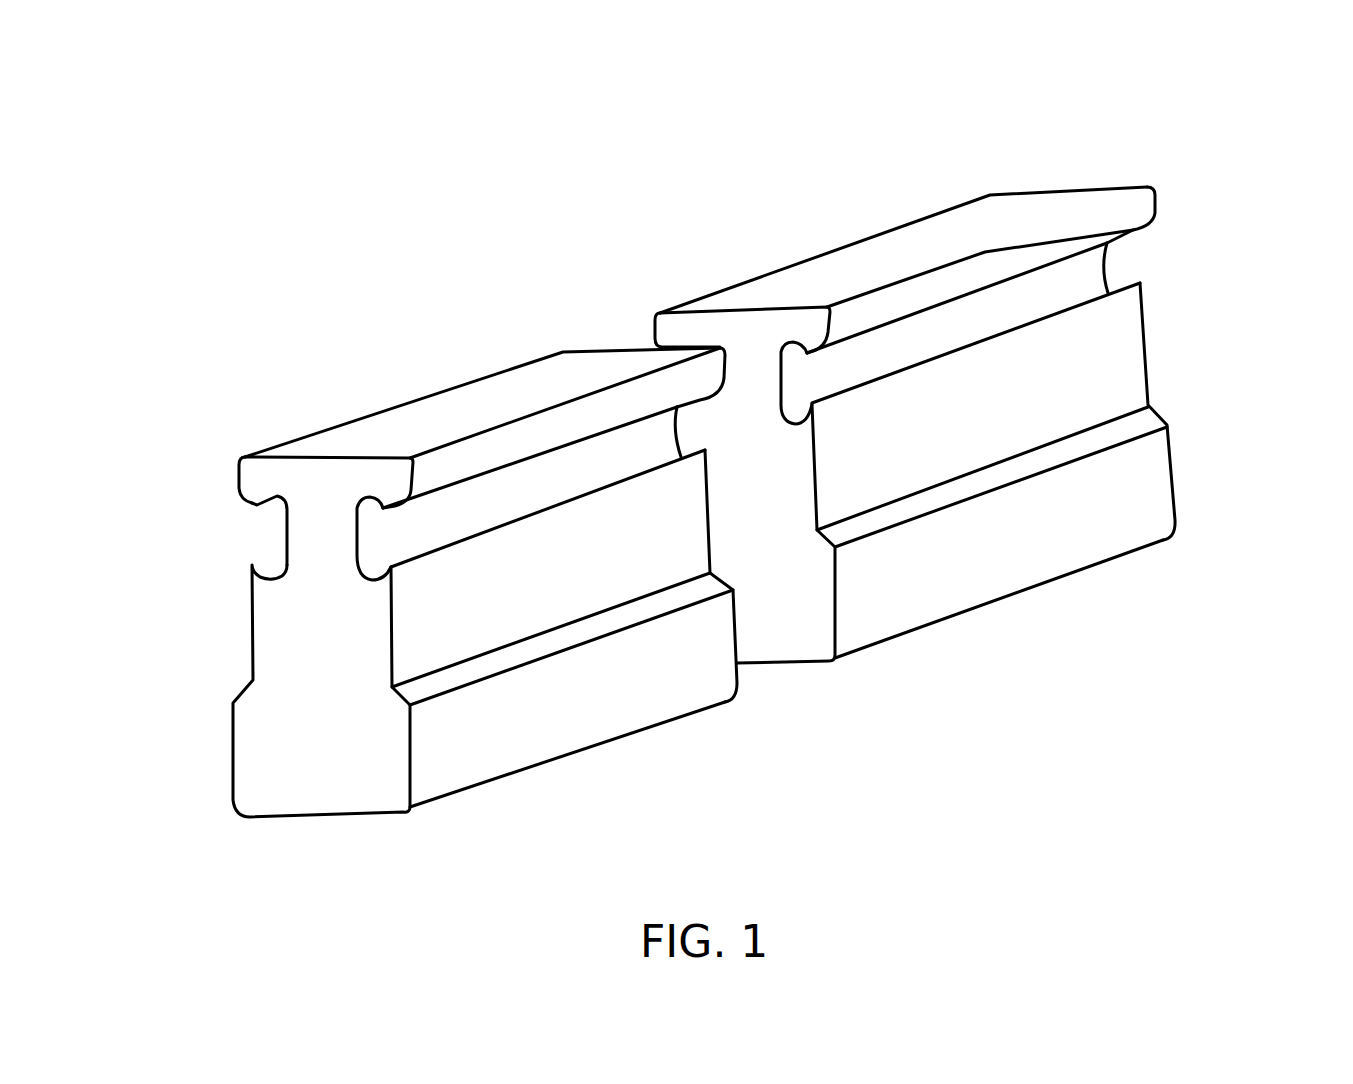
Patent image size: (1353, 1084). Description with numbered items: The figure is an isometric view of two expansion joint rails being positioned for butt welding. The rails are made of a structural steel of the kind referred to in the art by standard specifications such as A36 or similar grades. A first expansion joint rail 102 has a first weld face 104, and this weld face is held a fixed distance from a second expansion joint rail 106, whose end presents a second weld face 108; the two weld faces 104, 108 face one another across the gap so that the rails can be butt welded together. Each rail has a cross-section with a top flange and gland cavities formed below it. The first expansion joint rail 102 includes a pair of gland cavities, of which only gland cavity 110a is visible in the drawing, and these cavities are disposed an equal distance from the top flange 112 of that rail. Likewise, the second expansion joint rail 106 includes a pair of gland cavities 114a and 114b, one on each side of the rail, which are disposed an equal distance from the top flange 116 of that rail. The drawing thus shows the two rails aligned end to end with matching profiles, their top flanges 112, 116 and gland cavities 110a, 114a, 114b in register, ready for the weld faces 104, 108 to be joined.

The first expansion joint rail 102 is at (972, 363).
The first weld face 104 is at (682, 316).
The second expansion joint rail 106 is at (267, 632).
The second weld face 108 is at (482, 364).
The gland cavity 110a is at (794, 375).
The top flange 112 is at (1025, 205).
The gland cavity 114a is at (368, 530).
The gland cavity 114b is at (257, 528).
The top flange 116 is at (325, 440).